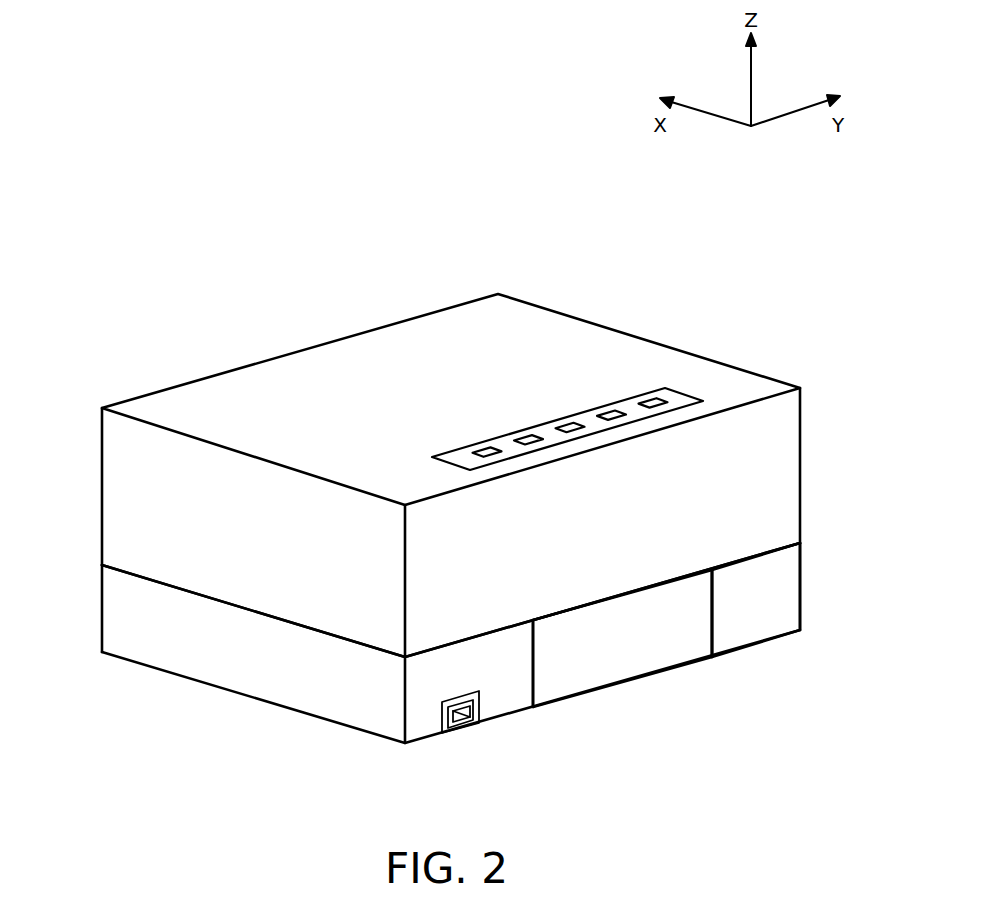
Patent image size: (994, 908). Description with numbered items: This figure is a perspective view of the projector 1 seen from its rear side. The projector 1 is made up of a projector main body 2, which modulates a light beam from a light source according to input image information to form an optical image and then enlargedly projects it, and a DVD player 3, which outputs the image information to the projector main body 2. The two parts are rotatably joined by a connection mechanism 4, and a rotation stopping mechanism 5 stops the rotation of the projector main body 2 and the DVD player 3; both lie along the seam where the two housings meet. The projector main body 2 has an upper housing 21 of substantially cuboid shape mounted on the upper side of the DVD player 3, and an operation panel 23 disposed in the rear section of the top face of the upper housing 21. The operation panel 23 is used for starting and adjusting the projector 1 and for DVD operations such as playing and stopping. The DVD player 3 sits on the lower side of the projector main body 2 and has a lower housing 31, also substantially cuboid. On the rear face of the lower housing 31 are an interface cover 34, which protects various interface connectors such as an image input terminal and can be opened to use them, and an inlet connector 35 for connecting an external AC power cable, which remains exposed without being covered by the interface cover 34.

The projector 1 is at (715, 296).
The projector main body 2 is at (812, 414).
The upper housing 21 is at (788, 460).
The operation panel 23 is at (443, 464).
The DVD player 3 is at (812, 581).
The connection mechanism 4 is at (138, 574).
The rotation stopping mechanism 5 is at (451, 600).
The lower housing 31 is at (760, 628).
The interface cover 34 is at (625, 667).
The inlet connector 35 is at (480, 706).